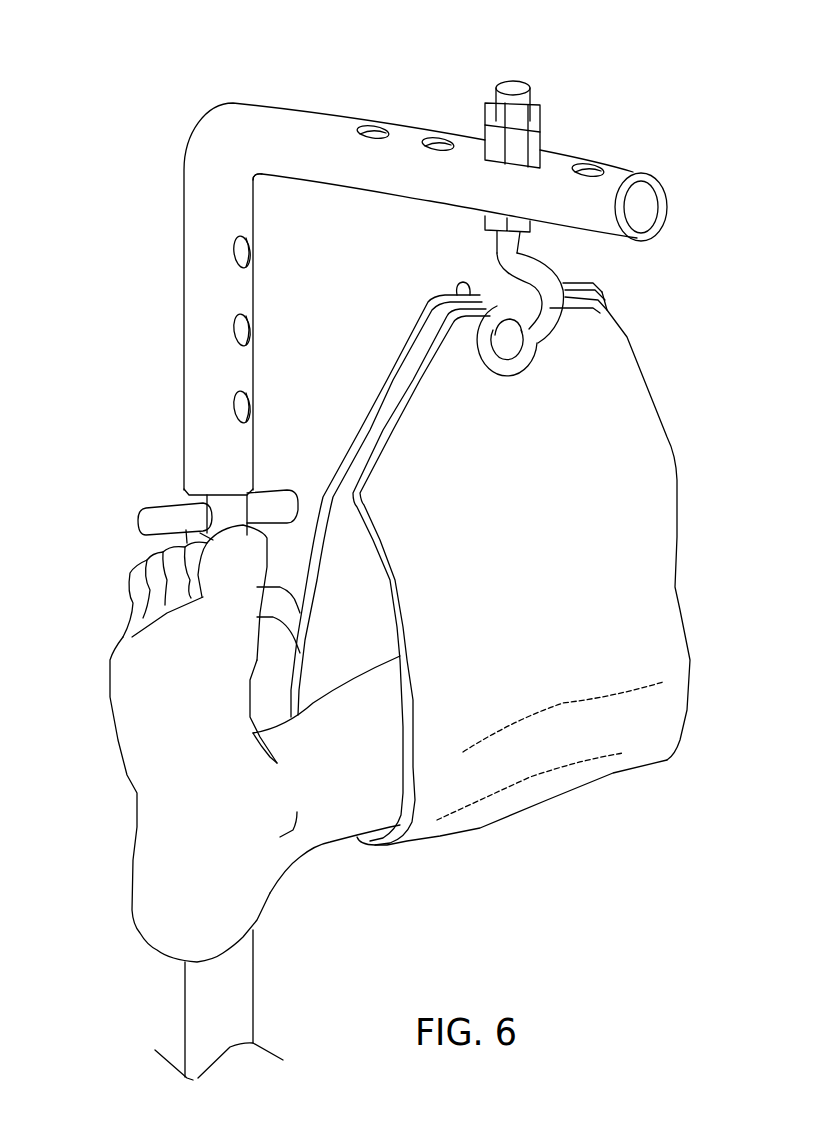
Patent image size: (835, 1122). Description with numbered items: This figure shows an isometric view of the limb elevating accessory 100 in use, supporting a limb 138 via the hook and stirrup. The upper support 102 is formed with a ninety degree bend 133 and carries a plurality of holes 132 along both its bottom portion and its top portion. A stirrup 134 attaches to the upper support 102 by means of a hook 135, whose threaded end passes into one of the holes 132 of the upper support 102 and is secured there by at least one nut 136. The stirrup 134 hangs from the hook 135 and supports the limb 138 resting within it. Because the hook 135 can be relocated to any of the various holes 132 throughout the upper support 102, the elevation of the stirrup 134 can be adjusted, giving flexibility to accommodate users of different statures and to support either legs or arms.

The limb elevating accessory 100 is at (723, 160).
The upper support 102 is at (237, 127).
The holes 132 is at (608, 185).
The 90 degree bend 133 is at (261, 183).
The stirrup 134 is at (623, 584).
The hook 135 is at (605, 305).
The nut 136 is at (540, 117).
The limb 138 is at (163, 782).